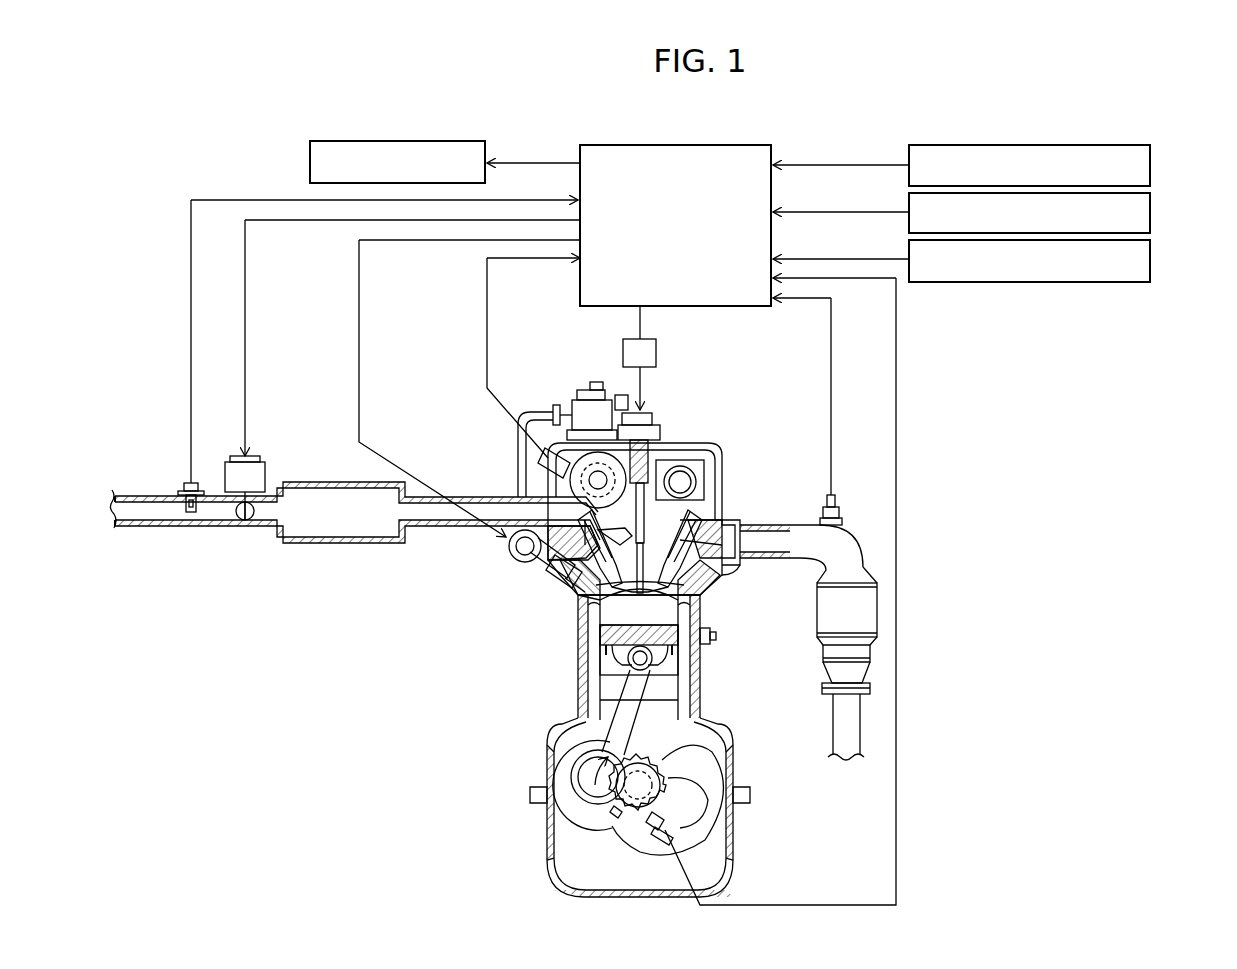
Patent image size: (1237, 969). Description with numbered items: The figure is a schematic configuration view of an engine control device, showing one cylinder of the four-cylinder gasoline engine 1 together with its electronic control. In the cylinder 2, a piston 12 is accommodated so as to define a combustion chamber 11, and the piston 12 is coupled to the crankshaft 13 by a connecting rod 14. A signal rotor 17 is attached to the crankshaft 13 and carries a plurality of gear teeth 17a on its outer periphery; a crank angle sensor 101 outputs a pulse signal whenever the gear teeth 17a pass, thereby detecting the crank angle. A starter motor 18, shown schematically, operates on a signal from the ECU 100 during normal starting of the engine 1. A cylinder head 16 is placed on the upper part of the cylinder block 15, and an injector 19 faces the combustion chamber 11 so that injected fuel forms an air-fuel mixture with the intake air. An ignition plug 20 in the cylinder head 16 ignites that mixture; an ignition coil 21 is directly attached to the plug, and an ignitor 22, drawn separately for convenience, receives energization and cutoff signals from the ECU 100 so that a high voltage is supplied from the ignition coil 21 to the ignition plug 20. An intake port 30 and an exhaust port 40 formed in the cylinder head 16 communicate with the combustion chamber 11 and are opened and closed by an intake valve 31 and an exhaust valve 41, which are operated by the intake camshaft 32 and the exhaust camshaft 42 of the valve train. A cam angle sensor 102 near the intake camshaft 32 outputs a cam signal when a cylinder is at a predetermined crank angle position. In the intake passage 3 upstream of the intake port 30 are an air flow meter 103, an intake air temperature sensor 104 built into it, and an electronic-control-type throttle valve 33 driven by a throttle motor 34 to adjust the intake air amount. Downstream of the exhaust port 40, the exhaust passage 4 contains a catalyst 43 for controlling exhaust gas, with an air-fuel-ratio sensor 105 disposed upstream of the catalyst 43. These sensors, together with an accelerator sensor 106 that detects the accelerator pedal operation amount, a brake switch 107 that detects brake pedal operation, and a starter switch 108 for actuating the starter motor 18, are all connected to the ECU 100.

The engine 1 is at (428, 708).
The cylinder 2 is at (680, 708).
The intake passage 3 is at (440, 512).
The exhaust passage 4 is at (766, 545).
The combustion chamber 11 is at (676, 608).
The piston 12 is at (612, 662).
The crankshaft 13 is at (555, 893).
The connecting rod 14 is at (594, 718).
The cylinder block 15 is at (702, 650).
The cylinder head 16 is at (736, 484).
The signal rotor 17 is at (626, 806).
The gear teeth 17a is at (700, 767).
The starter motor 18 is at (310, 160).
The injector 19 is at (548, 594).
The ignition plug 20 is at (604, 596).
The ignition coil 21 is at (648, 458).
The ignitor 22 is at (656, 352).
The intake port 30 is at (534, 501).
The intake valve 31 is at (570, 565).
The intake camshaft 32 is at (590, 470).
The throttle valve 33 is at (260, 508).
The throttle motor 34 is at (282, 470).
The exhaust port 40 is at (730, 518).
The exhaust valve 41 is at (724, 560).
The exhaust camshaft 42 is at (686, 474).
The catalyst 43 is at (818, 612).
The ECU 100 is at (720, 306).
The crank angle sensor 101 is at (680, 836).
The cam angle sensor 102 is at (536, 428).
The air flow meter 103 is at (178, 476).
The intake air temperature sensor 104 is at (232, 488).
The air-fuel-ratio sensor 105 is at (842, 510).
The accelerator sensor 106 is at (1150, 165).
The brake switch 107 is at (1150, 212).
The starter switch 108 is at (1150, 259).